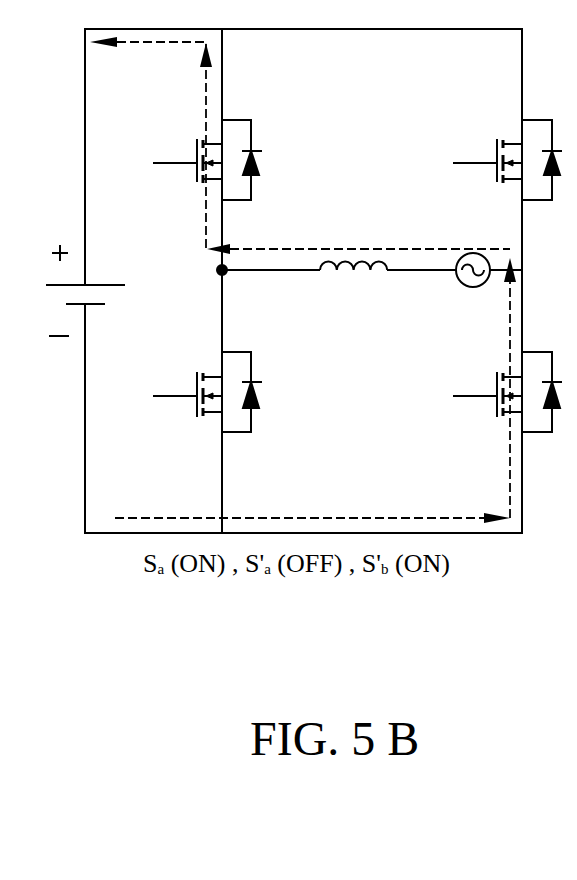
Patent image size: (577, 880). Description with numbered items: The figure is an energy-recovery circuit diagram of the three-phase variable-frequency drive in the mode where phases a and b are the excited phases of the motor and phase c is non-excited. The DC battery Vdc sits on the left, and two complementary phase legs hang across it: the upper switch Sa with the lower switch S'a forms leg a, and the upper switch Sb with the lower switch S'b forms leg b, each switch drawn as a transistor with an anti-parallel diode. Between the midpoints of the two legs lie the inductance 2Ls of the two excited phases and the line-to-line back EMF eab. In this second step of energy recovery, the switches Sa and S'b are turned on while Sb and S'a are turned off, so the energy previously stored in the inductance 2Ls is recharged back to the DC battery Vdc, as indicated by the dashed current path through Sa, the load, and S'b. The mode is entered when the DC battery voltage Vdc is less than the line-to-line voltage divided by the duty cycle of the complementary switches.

The switch Sa is at (207, 160).
The switch Sb is at (507, 160).
The switch S'a is at (207, 392).
The switch S'b is at (507, 392).
The DC battery voltage Vdc is at (73, 290).
The inductance 2Ls is at (339, 240).
The line-to-line back EMF eab is at (460, 239).